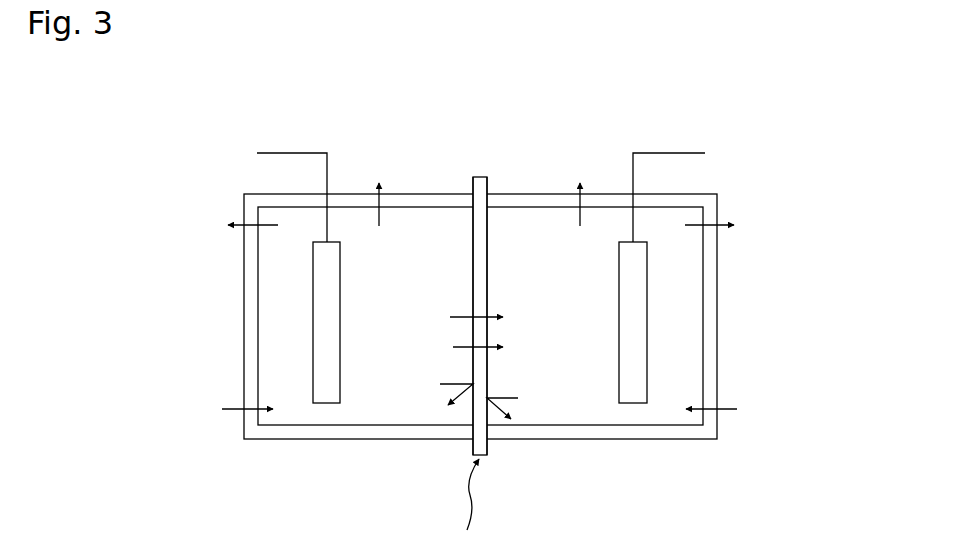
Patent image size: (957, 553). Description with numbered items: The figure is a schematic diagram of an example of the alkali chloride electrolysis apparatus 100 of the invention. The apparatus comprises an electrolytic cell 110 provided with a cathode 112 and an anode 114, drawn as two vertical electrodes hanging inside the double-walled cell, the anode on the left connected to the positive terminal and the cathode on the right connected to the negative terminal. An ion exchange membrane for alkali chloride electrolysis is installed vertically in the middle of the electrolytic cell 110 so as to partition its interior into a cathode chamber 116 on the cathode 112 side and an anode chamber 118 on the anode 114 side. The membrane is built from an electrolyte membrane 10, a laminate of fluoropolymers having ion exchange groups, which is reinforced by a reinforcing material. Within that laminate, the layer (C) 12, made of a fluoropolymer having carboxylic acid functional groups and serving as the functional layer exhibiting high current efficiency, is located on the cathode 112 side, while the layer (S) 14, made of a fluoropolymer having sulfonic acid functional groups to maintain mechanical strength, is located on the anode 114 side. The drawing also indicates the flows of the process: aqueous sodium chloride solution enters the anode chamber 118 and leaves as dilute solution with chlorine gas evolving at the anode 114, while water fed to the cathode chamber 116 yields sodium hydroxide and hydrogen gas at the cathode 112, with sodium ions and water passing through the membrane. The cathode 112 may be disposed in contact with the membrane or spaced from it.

The alkali chloride electrolysis apparatus 100 is at (417, 301).
The electrolyte membrane 10 is at (479, 173).
The layer (C) 12 is at (490, 277).
The layer (S) 14 is at (472, 246).
The electrolytic cell 110 is at (312, 440).
The cathode 112 is at (647, 302).
The anode 114 is at (313, 312).
The cathode chamber 116 is at (595, 412).
The anode chamber 118 is at (395, 412).